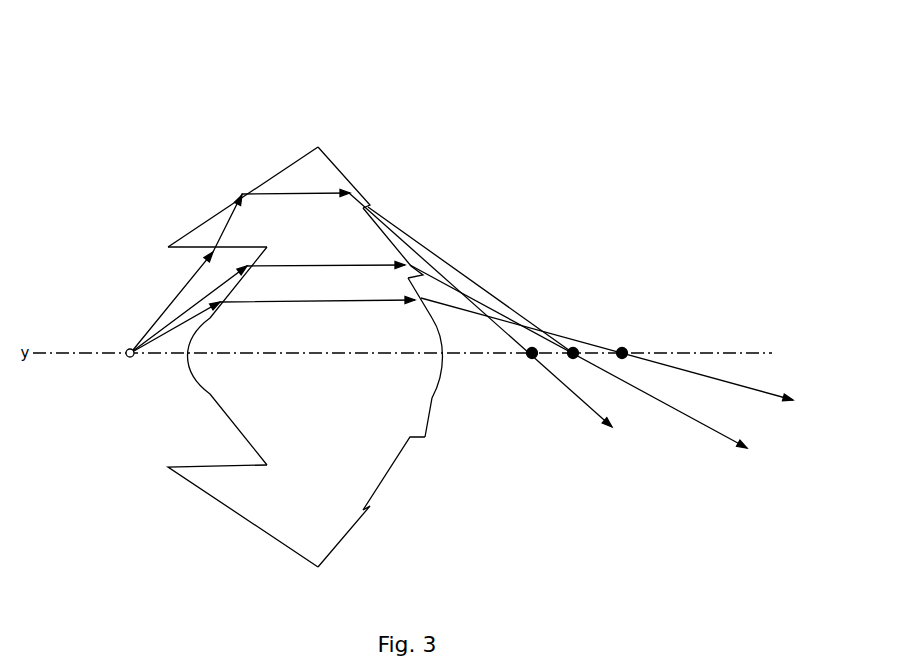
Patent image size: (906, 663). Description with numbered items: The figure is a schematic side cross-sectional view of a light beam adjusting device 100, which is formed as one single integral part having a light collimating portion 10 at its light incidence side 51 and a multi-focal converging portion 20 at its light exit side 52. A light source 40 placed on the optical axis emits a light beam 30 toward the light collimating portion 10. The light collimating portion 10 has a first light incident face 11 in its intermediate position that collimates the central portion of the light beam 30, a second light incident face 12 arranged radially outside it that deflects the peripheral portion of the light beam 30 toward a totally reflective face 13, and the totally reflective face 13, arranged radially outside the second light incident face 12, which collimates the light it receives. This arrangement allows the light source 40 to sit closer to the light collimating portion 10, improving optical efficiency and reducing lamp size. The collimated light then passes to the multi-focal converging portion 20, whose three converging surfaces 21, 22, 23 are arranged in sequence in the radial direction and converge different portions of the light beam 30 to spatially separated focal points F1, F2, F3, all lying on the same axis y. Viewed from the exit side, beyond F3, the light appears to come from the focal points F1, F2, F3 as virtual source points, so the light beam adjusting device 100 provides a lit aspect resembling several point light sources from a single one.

The light beam adjusting device 100 is at (317, 71).
The light collimating portion 10 is at (124, 244).
The first light incident face 11 is at (208, 397).
The second light incident face 12 is at (188, 247).
The totally reflective face 13 is at (265, 175).
The multi-focal converging portion 20 is at (446, 225).
The converging surface 21 is at (436, 326).
The converging surface 22 is at (392, 240).
The converging surface 23 is at (347, 178).
The light beam 30 is at (162, 315).
The light source 40 is at (127, 358).
The light incidence side 51 is at (149, 465).
The light exit side 52 is at (457, 482).
The focal point F1 is at (630, 363).
The focal point F2 is at (577, 368).
The focal point F3 is at (532, 368).